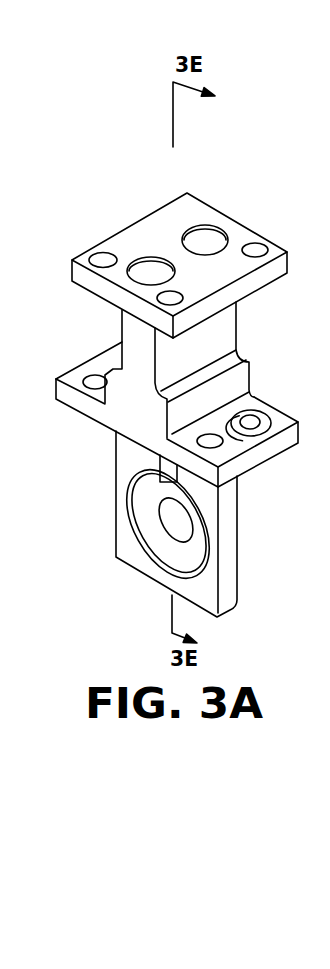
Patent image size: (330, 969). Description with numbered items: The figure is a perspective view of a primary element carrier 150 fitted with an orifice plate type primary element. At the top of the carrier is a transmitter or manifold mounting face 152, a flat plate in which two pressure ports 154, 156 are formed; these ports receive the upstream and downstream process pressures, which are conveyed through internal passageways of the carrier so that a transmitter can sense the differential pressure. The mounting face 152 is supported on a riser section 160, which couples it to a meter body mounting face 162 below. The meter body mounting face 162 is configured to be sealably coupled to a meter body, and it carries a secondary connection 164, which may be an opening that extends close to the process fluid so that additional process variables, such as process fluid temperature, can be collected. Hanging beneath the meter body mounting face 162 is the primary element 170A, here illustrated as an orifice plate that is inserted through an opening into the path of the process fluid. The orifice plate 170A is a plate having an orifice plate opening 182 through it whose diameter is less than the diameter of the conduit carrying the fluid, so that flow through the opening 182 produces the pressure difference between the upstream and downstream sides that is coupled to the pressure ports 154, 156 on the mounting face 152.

The primary element carrier 150 is at (100, 200).
The transmitter or manifold mounting face 152 is at (147, 237).
The pressure port 154 is at (146, 275).
The pressure port 156 is at (206, 241).
The riser section 160 is at (122, 334).
The meter body mounting face 162 is at (77, 411).
The secondary connection 164 is at (262, 413).
The primary element 170A is at (128, 543).
The orifice plate opening 182 is at (168, 518).